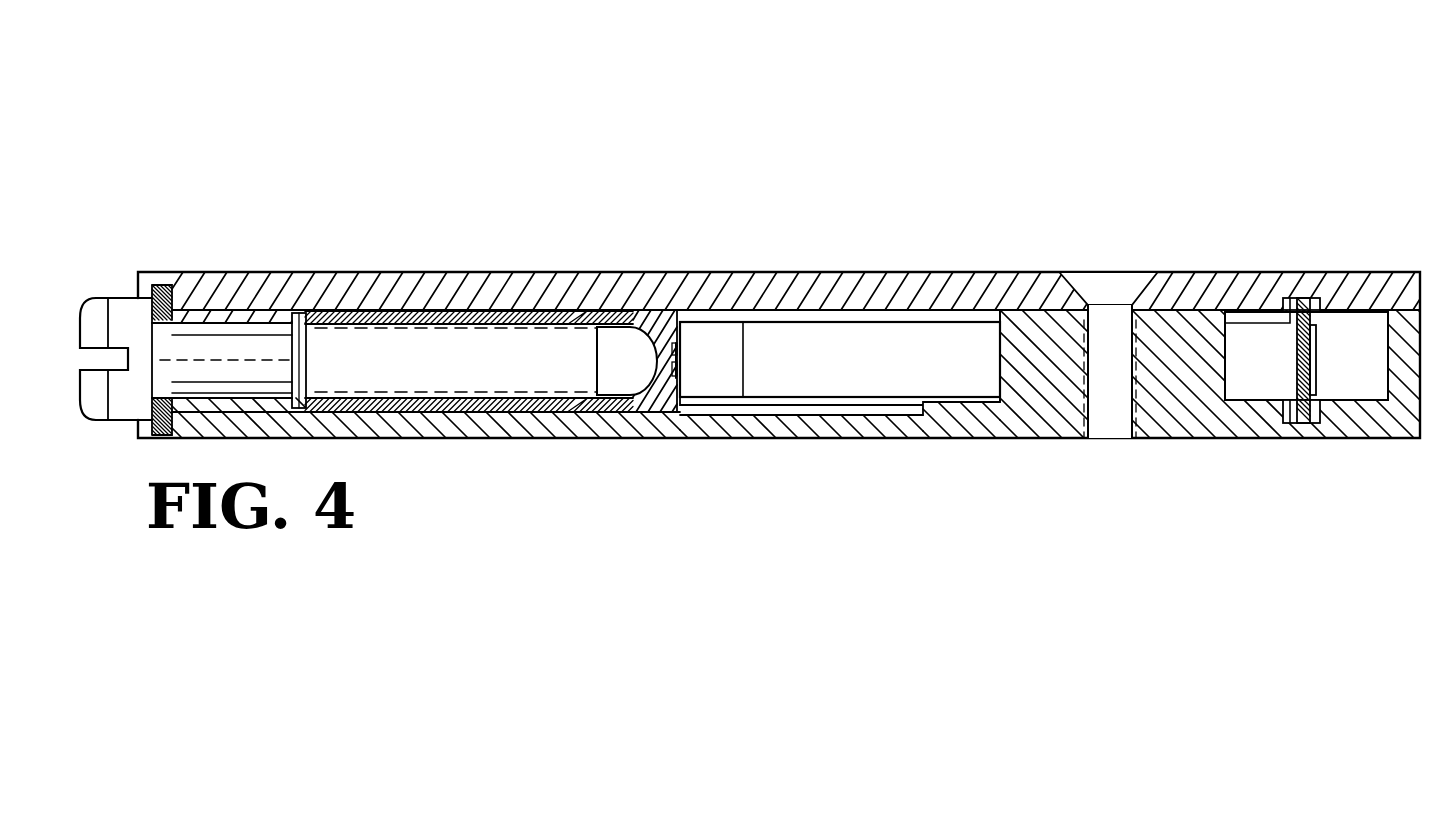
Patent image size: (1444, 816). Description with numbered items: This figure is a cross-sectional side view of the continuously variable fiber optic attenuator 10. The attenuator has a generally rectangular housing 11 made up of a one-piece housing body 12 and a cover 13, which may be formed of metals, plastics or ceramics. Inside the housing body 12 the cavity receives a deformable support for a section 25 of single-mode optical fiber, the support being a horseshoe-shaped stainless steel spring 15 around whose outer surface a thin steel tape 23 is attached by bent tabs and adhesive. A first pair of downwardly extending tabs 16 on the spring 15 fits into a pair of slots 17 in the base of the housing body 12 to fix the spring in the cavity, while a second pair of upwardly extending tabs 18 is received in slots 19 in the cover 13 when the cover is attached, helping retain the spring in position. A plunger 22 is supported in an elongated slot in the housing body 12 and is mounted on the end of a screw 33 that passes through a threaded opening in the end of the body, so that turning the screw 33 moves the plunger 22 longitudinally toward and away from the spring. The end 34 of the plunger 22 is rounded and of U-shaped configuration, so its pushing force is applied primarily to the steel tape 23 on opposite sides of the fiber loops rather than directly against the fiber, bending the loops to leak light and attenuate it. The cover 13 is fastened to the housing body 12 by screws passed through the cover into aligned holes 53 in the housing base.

The fiber optic attenuator 10 is at (370, 150).
The housing 11 is at (1212, 440).
The housing body 12 is at (852, 440).
The cover 13 is at (708, 275).
The horseshoe-shaped spring 15 is at (1285, 327).
The first pair of downwardly extending tabs 16 is at (1300, 425).
The slots 17 is at (1328, 405).
The second pair of upwardly extending tabs 18 is at (1300, 298).
The slots 19 is at (1316, 316).
The plunger 22 is at (447, 405).
The thin steel tape 23 is at (690, 386).
The section of optical fiber 25 is at (682, 356).
The screw 33 is at (232, 340).
The end of plunger 34 is at (666, 328).
The holes 53 is at (1090, 410).